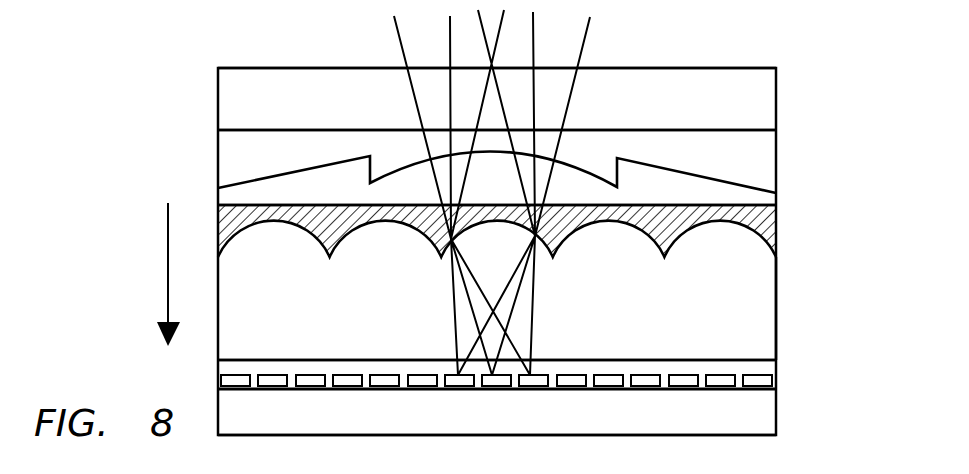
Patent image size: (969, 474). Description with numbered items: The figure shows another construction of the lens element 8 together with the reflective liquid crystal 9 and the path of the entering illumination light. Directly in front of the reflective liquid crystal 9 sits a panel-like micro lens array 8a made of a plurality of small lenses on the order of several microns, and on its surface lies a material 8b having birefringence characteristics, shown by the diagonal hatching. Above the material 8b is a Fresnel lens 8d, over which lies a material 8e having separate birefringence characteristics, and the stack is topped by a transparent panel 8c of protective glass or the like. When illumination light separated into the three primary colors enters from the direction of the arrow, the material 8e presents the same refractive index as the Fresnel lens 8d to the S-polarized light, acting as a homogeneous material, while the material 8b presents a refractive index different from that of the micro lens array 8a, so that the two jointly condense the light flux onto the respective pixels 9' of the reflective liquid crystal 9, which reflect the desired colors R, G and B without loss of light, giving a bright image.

The lens element 8 is at (870, 74).
The micro lens array 8a is at (757, 315).
The material having birefringence characteristics 8b is at (777, 221).
The transparent panel 8c is at (762, 100).
The Fresnel lens 8d is at (762, 197).
The material having separate birefringence characteristics 8e is at (762, 156).
The reflective liquid crystal 9 is at (533, 414).
The pixel 9' is at (648, 346).